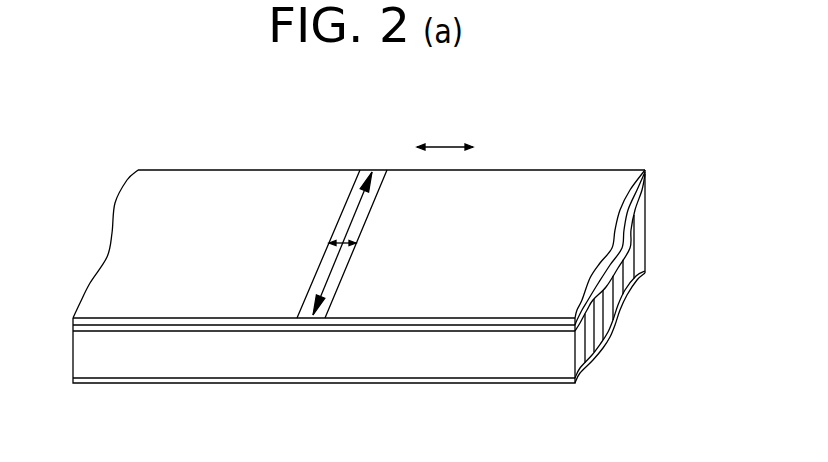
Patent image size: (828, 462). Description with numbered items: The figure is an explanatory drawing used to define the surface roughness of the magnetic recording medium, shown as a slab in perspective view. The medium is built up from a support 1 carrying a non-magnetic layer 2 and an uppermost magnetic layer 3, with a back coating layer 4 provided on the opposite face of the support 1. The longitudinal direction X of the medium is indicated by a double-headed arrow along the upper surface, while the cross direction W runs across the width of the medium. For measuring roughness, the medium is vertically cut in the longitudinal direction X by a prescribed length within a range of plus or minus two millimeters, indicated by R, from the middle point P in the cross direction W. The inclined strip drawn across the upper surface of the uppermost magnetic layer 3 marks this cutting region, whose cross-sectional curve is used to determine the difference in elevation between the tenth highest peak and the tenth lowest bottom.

The support 1 is at (645, 220).
The non-magnetic layer 2 is at (647, 177).
The uppermost magnetic layer 3 is at (585, 175).
The back coating layer 4 is at (645, 273).
The middle point P is at (343, 243).
The cross direction W is at (355, 217).
The cutting range R is at (345, 250).
The longitudinal direction X is at (447, 147).